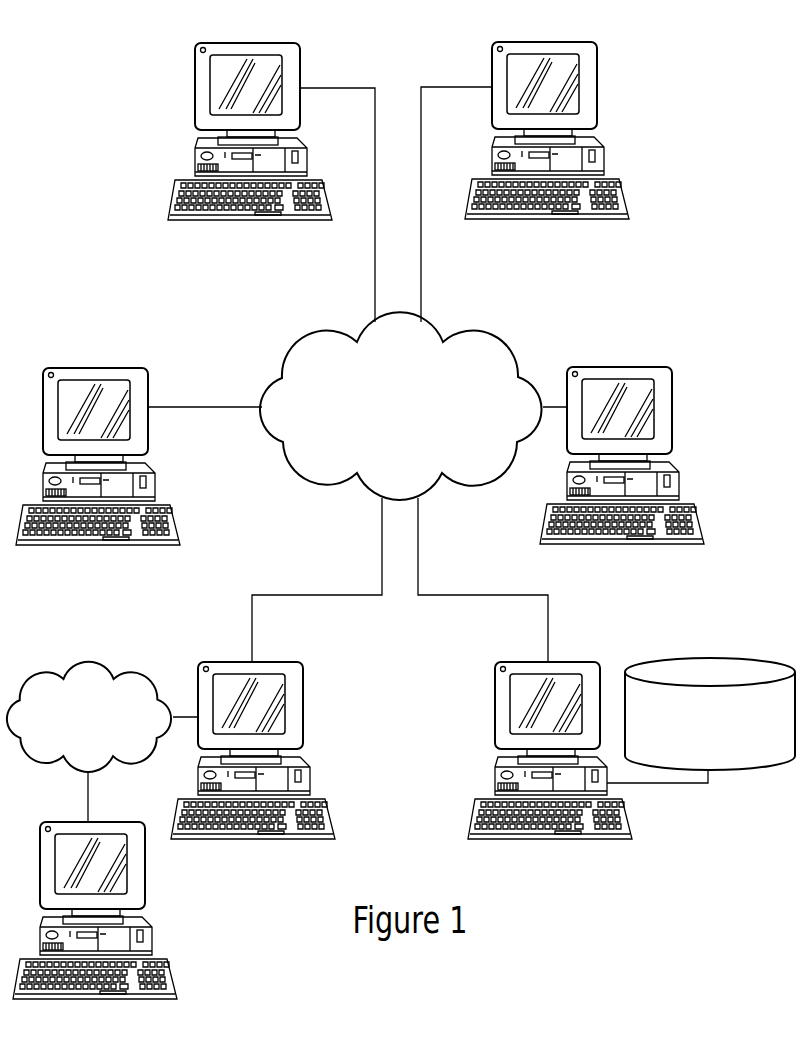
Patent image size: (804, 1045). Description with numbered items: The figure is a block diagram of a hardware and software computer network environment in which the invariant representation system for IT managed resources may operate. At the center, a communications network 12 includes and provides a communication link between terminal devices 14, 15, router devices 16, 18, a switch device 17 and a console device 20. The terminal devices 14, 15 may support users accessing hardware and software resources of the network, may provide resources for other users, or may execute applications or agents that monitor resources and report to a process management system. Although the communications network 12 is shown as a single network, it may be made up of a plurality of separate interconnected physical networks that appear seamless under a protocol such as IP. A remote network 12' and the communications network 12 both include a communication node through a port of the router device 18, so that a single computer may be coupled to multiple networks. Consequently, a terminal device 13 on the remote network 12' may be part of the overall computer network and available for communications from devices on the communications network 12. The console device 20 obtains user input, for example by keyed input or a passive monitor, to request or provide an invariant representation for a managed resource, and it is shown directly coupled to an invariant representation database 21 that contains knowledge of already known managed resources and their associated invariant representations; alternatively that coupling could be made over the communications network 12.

The communications network 12 is at (404, 406).
The remote network 12' is at (97, 701).
The terminal device 13 is at (144, 870).
The terminal device 14 is at (617, 367).
The terminal device 15 is at (596, 63).
The router device 16 is at (300, 65).
The switch device 17 is at (148, 382).
The router device 18 is at (303, 705).
The console device 20 is at (600, 672).
The invariant representation database 21 is at (707, 673).